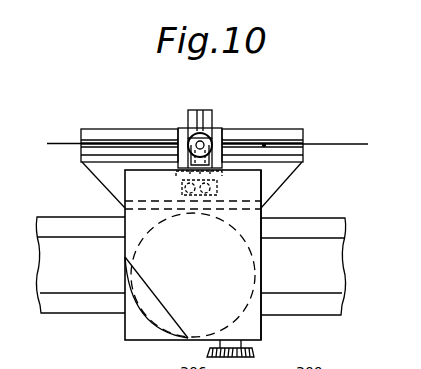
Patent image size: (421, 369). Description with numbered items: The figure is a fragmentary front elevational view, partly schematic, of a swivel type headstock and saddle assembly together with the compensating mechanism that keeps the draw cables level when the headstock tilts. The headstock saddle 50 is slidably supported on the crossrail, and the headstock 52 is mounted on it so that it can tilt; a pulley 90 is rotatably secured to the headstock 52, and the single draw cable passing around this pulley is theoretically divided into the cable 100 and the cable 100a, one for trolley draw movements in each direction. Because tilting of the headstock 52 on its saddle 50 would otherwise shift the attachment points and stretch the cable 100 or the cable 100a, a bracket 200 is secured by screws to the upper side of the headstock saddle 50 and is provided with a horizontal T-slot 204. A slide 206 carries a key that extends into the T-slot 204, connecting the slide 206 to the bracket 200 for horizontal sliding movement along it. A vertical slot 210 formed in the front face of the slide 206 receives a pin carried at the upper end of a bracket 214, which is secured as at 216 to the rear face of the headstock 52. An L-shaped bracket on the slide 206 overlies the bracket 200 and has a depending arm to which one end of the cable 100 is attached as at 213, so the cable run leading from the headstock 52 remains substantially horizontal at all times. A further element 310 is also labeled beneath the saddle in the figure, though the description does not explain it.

The cable 100 is at (68, 143).
The cable 100a is at (345, 144).
The bracket 214 is at (173, 138).
The T-slot 204 is at (264, 143).
The attachment point 213 is at (228, 139).
The bracket 200 is at (284, 178).
The slide 206 is at (181, 129).
The vertical slot 210 is at (200, 110).
The pulley 90 is at (213, 138).
The headstock saddle 50 is at (145, 340).
The headstock 52 is at (261, 328).
The securing point 216 is at (219, 188).
The foot 310 is at (239, 354).